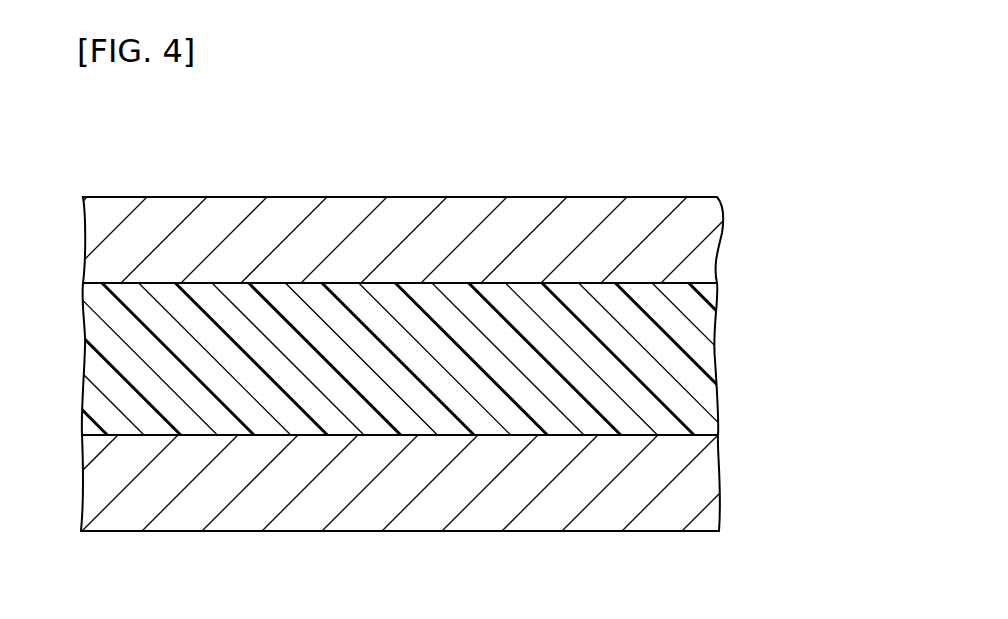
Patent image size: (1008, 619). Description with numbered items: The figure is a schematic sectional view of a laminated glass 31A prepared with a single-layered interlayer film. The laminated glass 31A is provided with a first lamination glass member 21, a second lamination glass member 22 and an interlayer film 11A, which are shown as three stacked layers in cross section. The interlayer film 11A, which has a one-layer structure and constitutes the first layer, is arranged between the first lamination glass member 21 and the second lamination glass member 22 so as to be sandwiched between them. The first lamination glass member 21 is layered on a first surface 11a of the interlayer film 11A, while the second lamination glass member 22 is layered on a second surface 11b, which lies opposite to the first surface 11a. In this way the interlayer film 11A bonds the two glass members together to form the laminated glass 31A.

The laminated glass 31A is at (221, 165).
The interlayer film 11A is at (318, 283).
The first surface 11a is at (413, 435).
The second surface 11b is at (413, 283).
The first lamination glass member 21 is at (718, 468).
The second lamination glass member 22 is at (720, 233).